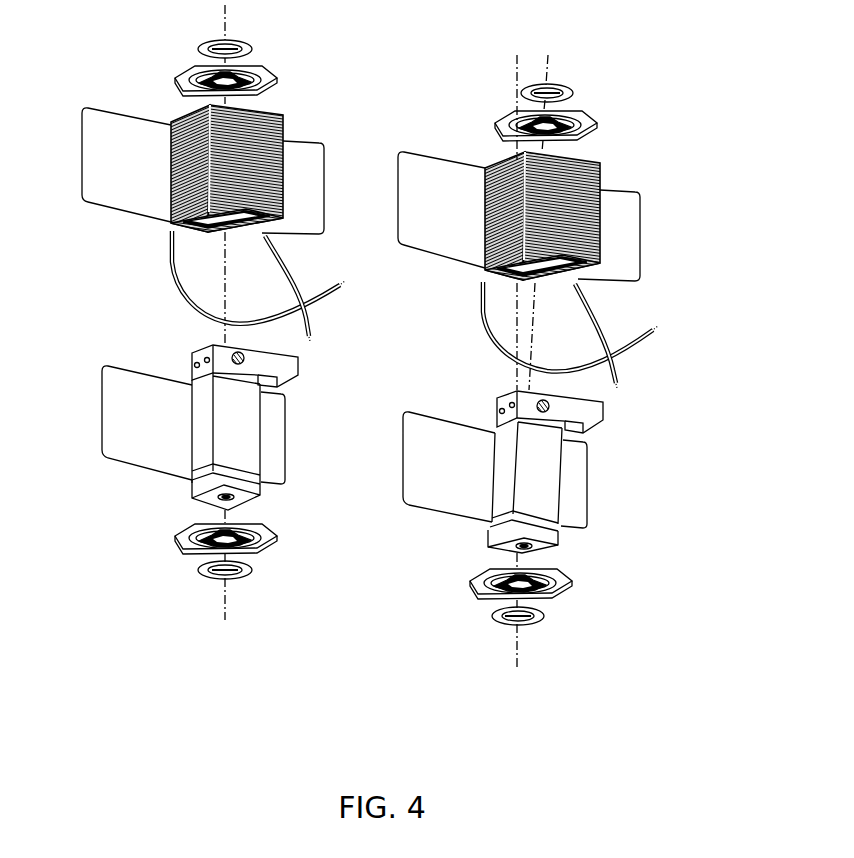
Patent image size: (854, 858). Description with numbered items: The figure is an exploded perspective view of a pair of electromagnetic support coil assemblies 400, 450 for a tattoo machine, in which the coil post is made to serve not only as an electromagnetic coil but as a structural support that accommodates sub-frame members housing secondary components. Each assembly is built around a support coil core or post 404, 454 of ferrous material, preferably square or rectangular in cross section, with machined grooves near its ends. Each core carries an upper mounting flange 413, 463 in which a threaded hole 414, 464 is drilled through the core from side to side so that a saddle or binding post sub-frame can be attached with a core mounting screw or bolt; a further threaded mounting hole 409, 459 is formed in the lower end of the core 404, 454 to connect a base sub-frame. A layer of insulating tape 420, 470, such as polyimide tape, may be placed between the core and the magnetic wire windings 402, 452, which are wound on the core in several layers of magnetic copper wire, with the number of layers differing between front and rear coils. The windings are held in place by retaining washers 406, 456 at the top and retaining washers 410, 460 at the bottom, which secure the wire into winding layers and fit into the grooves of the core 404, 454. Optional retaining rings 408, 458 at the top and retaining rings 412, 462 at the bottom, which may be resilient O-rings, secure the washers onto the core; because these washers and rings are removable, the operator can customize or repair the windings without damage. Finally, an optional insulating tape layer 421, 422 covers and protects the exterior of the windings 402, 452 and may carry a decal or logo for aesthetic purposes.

The electromagnetic support coil assembly 400 is at (92, 658).
The magnetic wire windings 402 is at (175, 113).
The coil core or post 404 is at (183, 447).
The retaining washer 406 is at (171, 72).
The retaining ring 408 is at (206, 37).
The threaded mounting hole 409 is at (222, 500).
The retaining washer 410 is at (170, 545).
The retaining ring 412 is at (205, 580).
The upper mounting flange 413 is at (190, 348).
The threaded hole 414 is at (237, 352).
The insulating tape 420 is at (193, 425).
The insulating tape layer 421 is at (203, 171).
The insulating tape layer 422 is at (519, 216).
The electromagnetic support coil assembly 450 is at (666, 668).
The magnetic wire windings 452 is at (604, 172).
The coil core or post 454 is at (566, 482).
The retaining washer 456 is at (598, 120).
The retaining ring 458 is at (571, 85).
The threaded mounting hole 459 is at (536, 545).
The retaining washer 460 is at (576, 580).
The retaining ring 462 is at (551, 618).
The upper mounting flange 463 is at (607, 412).
The threaded hole 464 is at (549, 405).
The insulating tape 470 is at (495, 470).